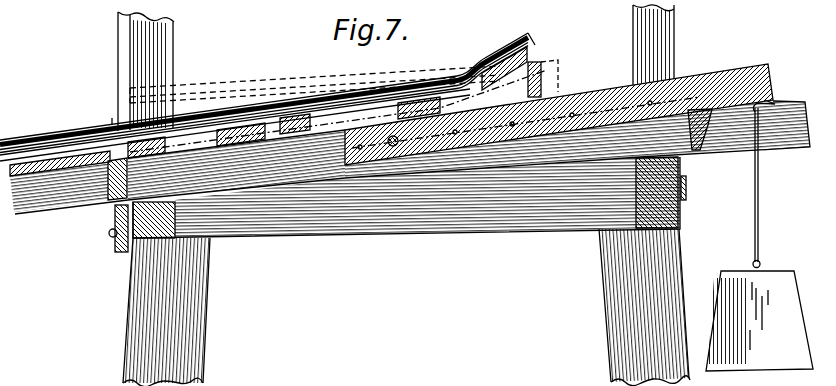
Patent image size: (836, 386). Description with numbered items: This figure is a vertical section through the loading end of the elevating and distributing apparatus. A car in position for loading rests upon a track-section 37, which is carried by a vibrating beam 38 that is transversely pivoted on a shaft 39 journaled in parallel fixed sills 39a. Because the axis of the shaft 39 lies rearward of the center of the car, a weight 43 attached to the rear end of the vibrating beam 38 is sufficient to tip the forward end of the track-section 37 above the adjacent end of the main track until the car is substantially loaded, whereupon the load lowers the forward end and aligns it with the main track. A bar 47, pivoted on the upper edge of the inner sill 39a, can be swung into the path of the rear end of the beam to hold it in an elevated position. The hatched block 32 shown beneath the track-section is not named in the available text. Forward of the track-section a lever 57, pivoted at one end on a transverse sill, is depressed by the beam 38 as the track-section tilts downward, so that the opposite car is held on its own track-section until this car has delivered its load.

The wedge block 32 is at (559, 114).
The track-section 37 is at (267, 93).
The vibrating beam 38 is at (177, 172).
The shaft 39 is at (393, 147).
The fixed sills 39a is at (577, 139).
The weight 43 is at (759, 321).
The bar 47 is at (766, 101).
The lever 57 is at (117, 221).